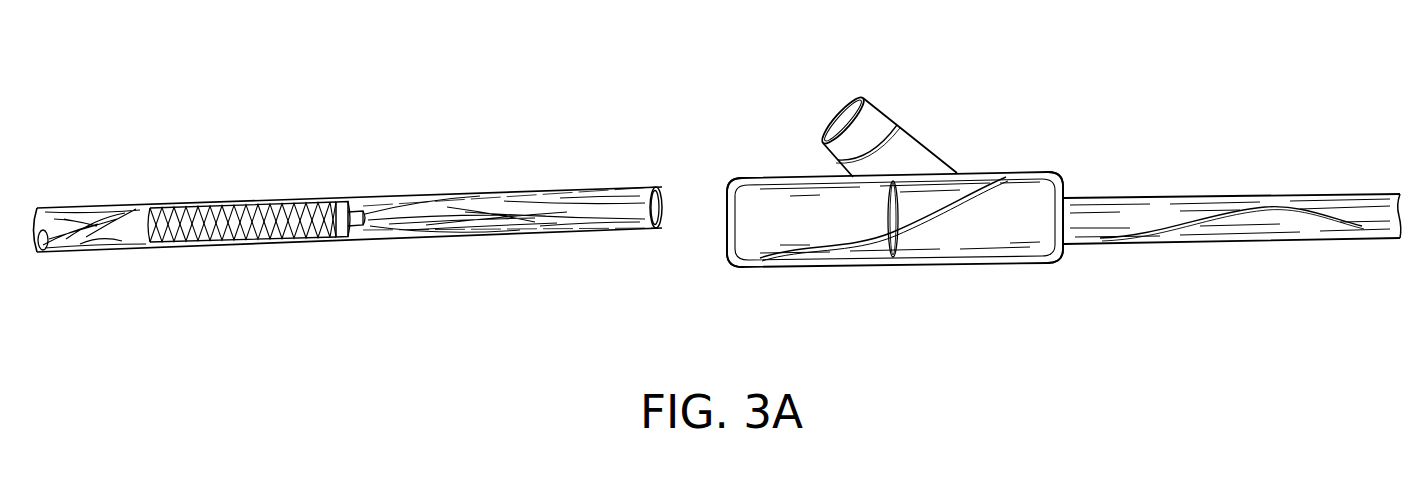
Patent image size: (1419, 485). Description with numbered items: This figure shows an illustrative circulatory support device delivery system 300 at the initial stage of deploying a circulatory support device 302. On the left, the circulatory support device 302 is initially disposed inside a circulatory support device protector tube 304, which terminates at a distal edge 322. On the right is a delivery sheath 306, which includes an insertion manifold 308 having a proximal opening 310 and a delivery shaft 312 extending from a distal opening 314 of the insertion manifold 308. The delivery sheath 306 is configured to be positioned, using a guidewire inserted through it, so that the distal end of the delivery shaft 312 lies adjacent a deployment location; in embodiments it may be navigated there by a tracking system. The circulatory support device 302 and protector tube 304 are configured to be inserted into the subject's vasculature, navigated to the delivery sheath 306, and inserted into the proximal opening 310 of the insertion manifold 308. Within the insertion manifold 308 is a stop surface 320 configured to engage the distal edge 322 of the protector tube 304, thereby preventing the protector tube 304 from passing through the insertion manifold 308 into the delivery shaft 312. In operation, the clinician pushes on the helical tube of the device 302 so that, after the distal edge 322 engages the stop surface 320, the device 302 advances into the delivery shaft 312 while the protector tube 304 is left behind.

The circulatory support device delivery system 300 is at (131, 99).
The circulatory support device 302 is at (342, 202).
The circulatory support device protector tube 304 is at (624, 186).
The delivery sheath 306 is at (1139, 124).
The insertion manifold 308 is at (946, 266).
The proximal opening 310 is at (727, 243).
The delivery shaft 312 is at (1353, 196).
The distal opening 314 is at (1065, 243).
The stop surface 320 is at (885, 238).
The distal edge 322 is at (657, 212).